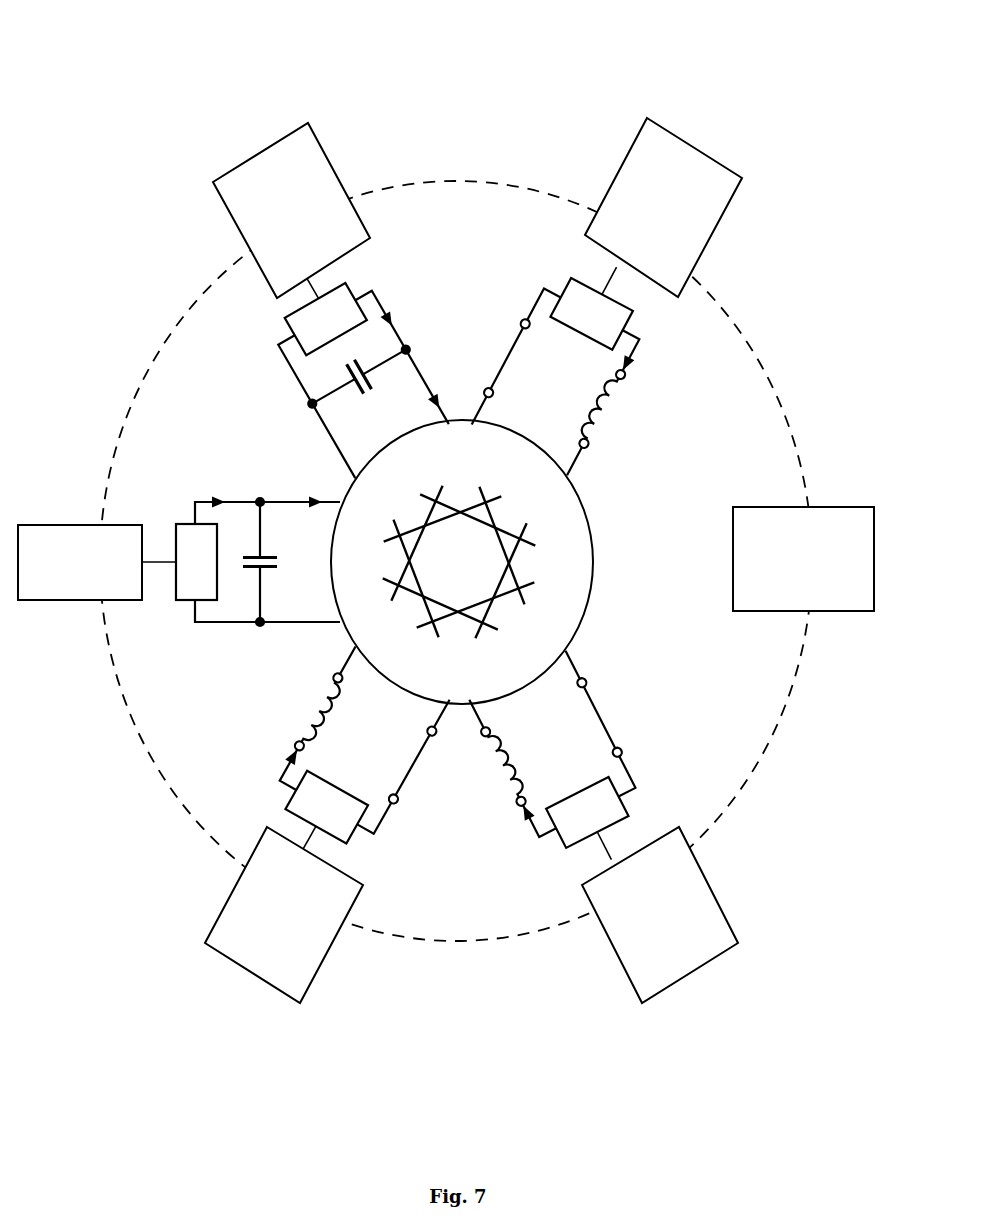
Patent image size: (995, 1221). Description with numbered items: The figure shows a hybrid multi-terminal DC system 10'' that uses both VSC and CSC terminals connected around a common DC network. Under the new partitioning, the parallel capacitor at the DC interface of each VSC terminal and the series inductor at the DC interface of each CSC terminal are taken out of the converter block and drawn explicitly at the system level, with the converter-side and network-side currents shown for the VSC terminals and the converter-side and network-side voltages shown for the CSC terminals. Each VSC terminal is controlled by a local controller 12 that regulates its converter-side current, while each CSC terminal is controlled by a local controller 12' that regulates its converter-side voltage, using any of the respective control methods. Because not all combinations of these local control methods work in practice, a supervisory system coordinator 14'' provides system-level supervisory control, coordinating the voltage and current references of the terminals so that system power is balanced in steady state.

The hybrid multi-terminal DC system 10'' is at (449, 540).
The local controller 12 is at (194, 361).
The local controller 12' is at (471, 943).
The supervisory system coordinator 14'' is at (807, 498).